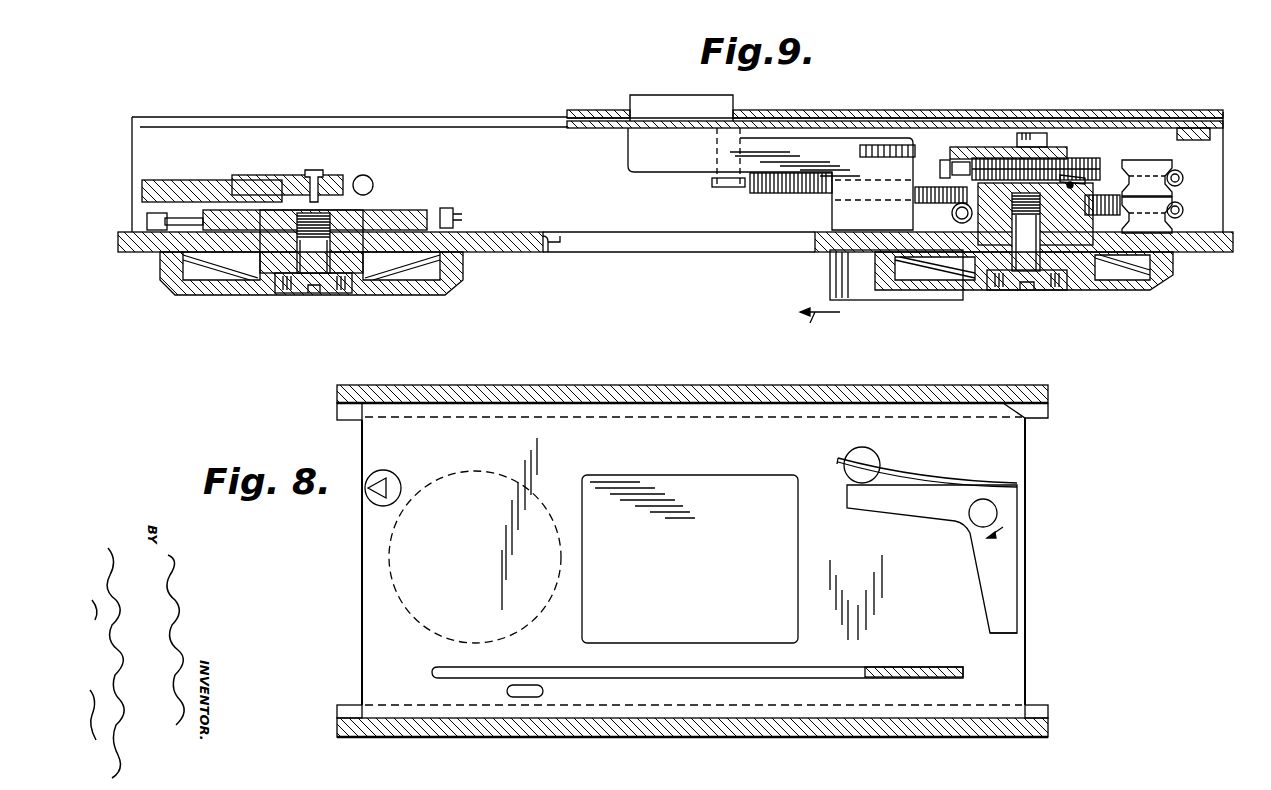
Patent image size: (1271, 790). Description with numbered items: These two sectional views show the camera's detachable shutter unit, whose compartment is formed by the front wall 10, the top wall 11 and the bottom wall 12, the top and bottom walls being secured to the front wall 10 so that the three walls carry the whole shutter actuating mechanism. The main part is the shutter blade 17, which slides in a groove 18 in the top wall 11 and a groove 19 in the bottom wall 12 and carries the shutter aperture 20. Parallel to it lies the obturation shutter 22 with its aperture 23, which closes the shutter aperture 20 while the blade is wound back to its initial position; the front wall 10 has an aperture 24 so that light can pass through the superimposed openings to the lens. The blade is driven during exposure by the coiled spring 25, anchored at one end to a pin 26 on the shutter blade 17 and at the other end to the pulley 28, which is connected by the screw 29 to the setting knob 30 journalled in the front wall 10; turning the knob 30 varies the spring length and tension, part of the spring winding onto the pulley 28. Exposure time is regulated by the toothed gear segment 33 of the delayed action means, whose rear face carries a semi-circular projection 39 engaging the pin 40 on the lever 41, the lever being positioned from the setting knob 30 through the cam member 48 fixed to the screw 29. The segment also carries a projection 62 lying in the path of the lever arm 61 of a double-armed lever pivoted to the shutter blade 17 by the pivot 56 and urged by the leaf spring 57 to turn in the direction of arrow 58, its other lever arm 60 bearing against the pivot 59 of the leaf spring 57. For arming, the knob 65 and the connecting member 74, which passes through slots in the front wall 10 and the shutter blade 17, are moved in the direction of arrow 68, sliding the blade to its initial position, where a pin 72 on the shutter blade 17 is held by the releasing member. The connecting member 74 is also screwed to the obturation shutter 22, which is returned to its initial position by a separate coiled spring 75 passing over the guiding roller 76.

In FIG. 9, the compartment front wall 10 is at (152, 254).
In FIG. 8, the top wall 11 is at (1050, 399).
In FIG. 8, the bottom wall 12 is at (1040, 721).
In FIG. 9, the shutter blade 17 is at (1072, 122).
In FIG. 8, the shutter blade 17 is at (1013, 452).
In FIG. 8, the groove 18 is at (950, 404).
In FIG. 8, the groove 19 is at (902, 712).
In FIG. 9, the shutter aperture 20 is at (900, 125).
In FIG. 8, the shutter aperture 20 is at (640, 640).
In FIG. 9, the obturation shutter 22 is at (1052, 112).
In FIG. 8, the obturation shutter 22 is at (718, 580).
In FIG. 9, the aperture 23 is at (766, 112).
In FIG. 8, the aperture 23 is at (425, 620).
In FIG. 9, the aperture 24 is at (565, 244).
In FIG. 9, the coiled spring 25 is at (770, 192).
In FIG. 9, the pin 26 is at (727, 190).
In FIG. 8, the pin 26 is at (527, 698).
In FIG. 9, the pulley 28 is at (1060, 290).
In FIG. 9, the screw 29 is at (1022, 286).
In FIG. 9, the setting knob 30 is at (1110, 287).
In FIG. 9, the toothed gear segment 33 is at (1060, 153).
In FIG. 9, the semi-circular projection 39 is at (964, 162).
In FIG. 9, the pin 40 is at (946, 160).
In FIG. 9, the lever 41 is at (1086, 168).
In FIG. 9, the cam member 48 is at (1075, 186).
In FIG. 8, the pivot 56 is at (990, 512).
In FIG. 8, the leaf spring 57 is at (940, 478).
In FIG. 8, the arrow 58 is at (1003, 536).
In FIG. 8, the pivot 59 is at (870, 456).
In FIG. 8, the lever arm 60 is at (905, 506).
In FIG. 8, the lever arm 61 is at (991, 625).
In FIG. 9, the projection 62 is at (1046, 143).
In FIG. 9, the knob 65 is at (862, 292).
In FIG. 9, the arrow 68 is at (820, 326).
In FIG. 8, the pin 72 is at (392, 480).
In FIG. 9, the connecting member 74 is at (648, 102).
In FIG. 8, the connecting member 74 is at (895, 666).
In FIG. 9, the coiled spring 75 is at (992, 165).
In FIG. 9, the guiding roller 76 is at (1144, 165).